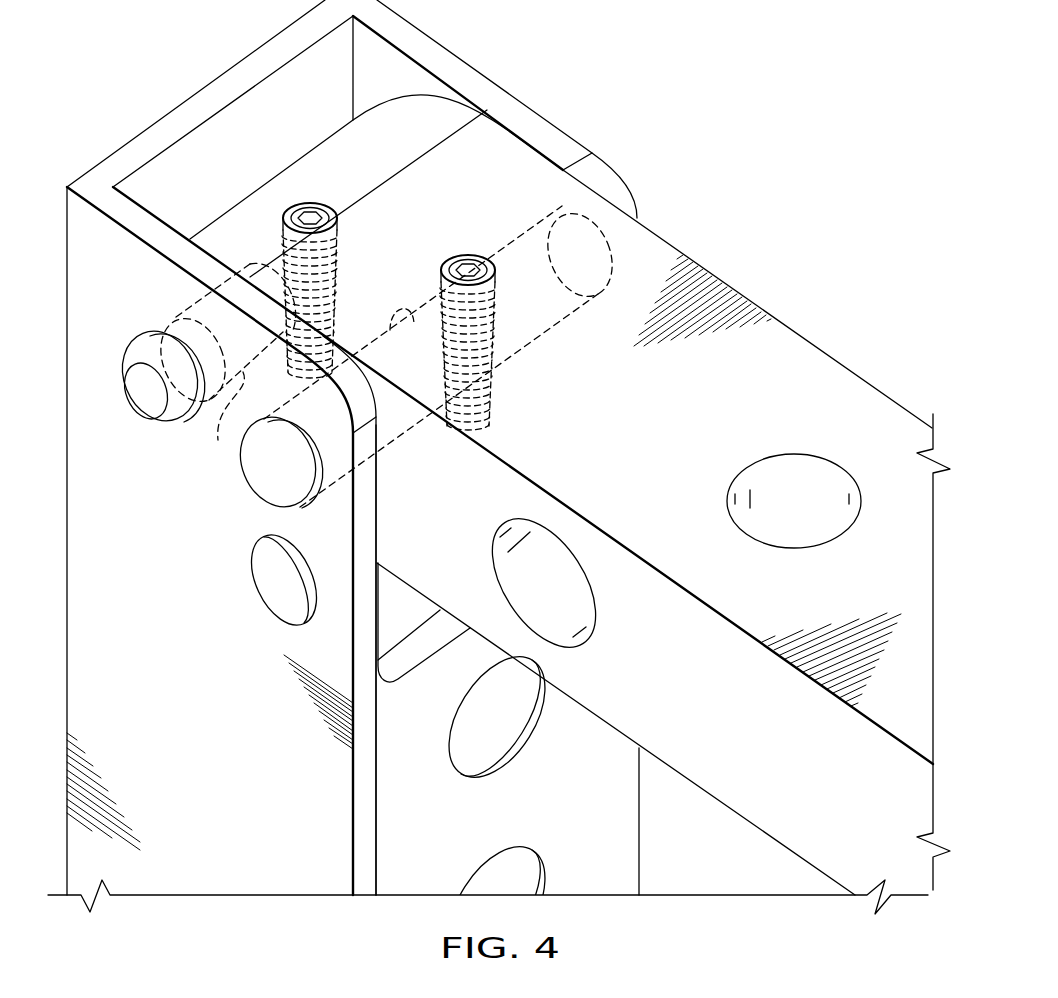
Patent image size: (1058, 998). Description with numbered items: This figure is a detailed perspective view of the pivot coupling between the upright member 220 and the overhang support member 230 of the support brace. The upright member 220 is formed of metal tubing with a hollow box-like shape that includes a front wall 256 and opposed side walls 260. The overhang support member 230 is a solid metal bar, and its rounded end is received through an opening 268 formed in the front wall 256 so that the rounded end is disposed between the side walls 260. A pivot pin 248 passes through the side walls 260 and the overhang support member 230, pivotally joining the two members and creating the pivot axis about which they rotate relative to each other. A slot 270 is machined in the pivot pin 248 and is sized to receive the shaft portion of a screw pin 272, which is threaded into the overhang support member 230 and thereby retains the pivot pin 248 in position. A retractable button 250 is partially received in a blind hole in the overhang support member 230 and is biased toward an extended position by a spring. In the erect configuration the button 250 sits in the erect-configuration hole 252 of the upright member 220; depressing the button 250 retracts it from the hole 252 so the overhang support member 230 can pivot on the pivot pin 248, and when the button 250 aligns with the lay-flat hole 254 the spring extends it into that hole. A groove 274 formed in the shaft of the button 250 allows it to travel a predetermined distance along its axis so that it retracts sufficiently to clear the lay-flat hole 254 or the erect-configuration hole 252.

The upright member 220 is at (185, 882).
The overhang support member 230 is at (843, 385).
The pivot pin 248 is at (268, 477).
The retractable button 250 is at (156, 403).
The erect-configuration hole 252 is at (160, 318).
The lay-flat hole 254 is at (277, 597).
The front wall 256 is at (378, 882).
The side walls 260 is at (463, 77).
The opening 268 is at (420, 645).
The slot 270 is at (395, 300).
The screw pin 272 is at (468, 256).
The groove 274 is at (227, 430).